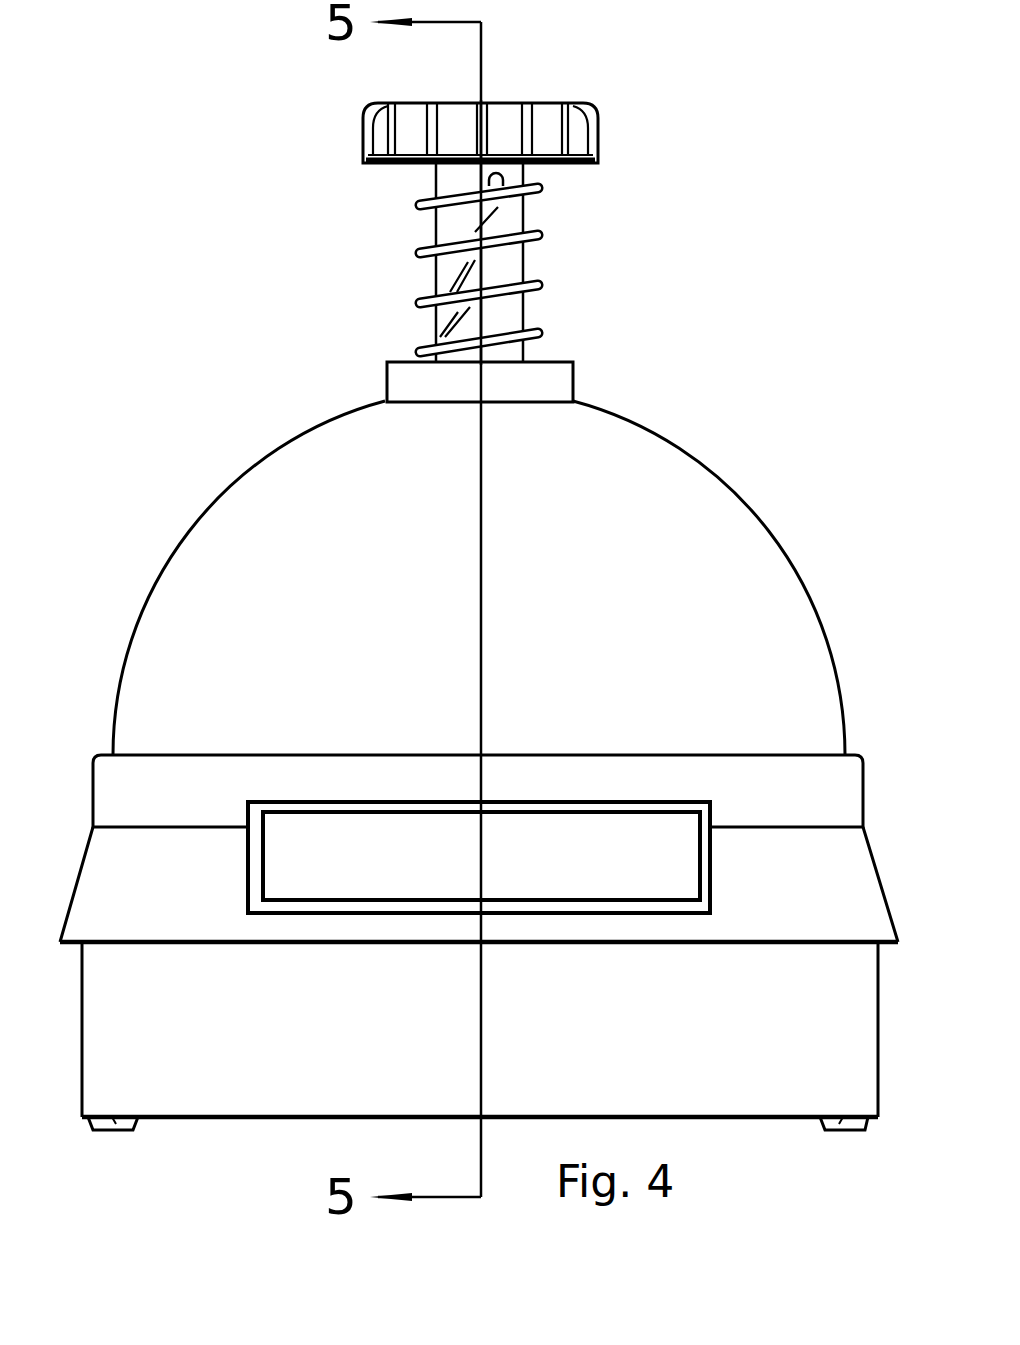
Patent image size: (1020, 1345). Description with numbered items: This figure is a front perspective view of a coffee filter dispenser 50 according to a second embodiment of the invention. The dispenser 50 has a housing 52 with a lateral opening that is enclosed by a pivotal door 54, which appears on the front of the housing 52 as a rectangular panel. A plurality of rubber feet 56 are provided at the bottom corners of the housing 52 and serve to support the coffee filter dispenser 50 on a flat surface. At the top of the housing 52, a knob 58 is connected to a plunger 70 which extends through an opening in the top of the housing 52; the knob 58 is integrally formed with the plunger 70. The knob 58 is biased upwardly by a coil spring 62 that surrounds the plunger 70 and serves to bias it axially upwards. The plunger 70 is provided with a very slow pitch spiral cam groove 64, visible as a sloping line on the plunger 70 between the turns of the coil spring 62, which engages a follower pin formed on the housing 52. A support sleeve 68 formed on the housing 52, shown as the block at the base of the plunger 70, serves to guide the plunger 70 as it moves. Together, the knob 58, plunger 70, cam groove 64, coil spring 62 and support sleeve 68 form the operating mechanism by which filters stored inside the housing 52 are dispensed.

The coffee filter dispenser 50 is at (242, 420).
The housing 52 is at (616, 619).
The pivotal door 54 is at (614, 869).
The rubber feet 56 is at (122, 1140).
The knob 58 is at (605, 136).
The coil spring 62 is at (560, 280).
The spiral cam groove 64 is at (500, 220).
The support sleeve 68 is at (578, 380).
The plunger 70 is at (440, 182).